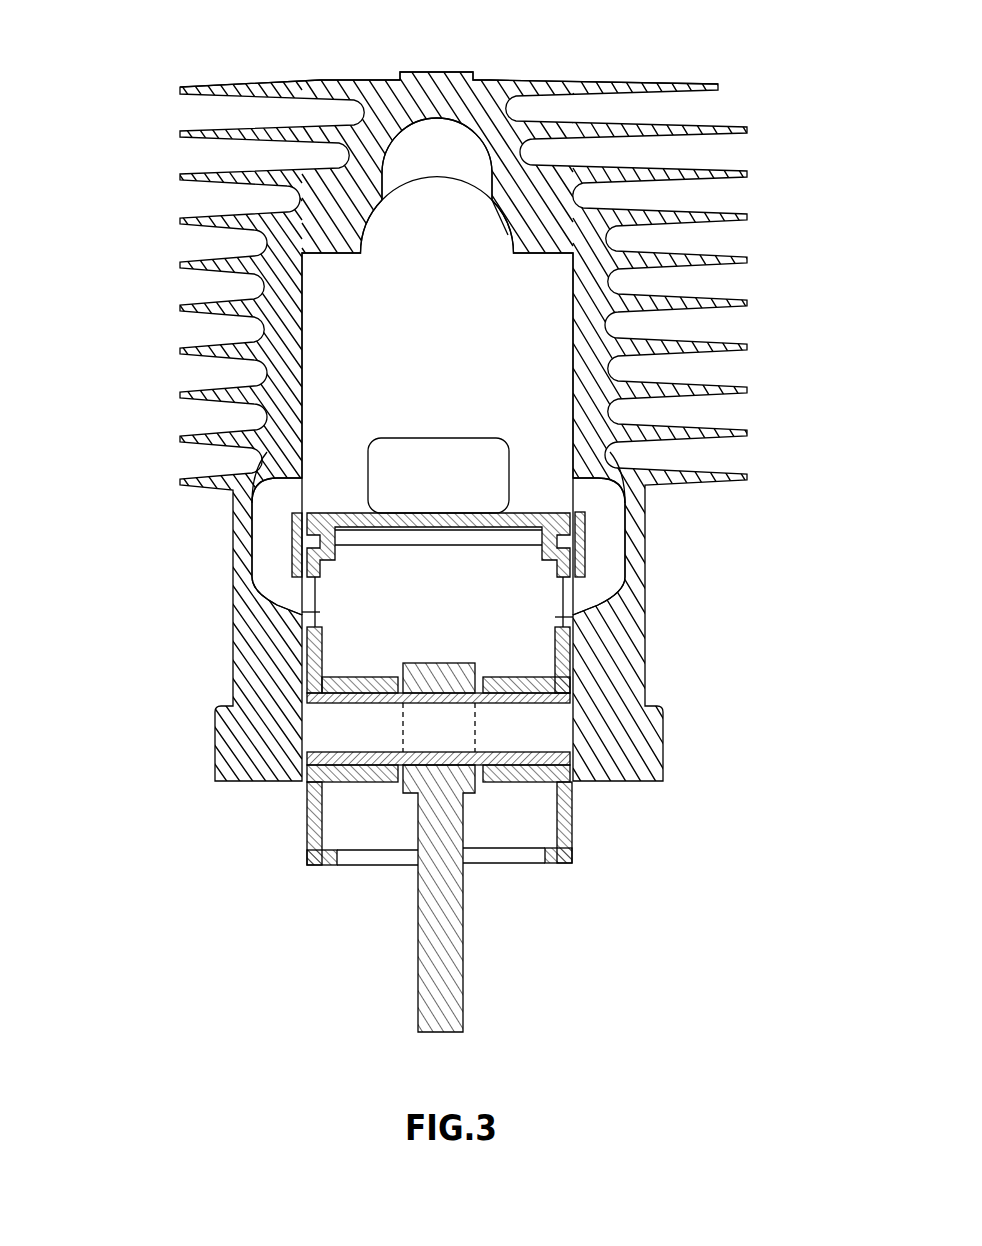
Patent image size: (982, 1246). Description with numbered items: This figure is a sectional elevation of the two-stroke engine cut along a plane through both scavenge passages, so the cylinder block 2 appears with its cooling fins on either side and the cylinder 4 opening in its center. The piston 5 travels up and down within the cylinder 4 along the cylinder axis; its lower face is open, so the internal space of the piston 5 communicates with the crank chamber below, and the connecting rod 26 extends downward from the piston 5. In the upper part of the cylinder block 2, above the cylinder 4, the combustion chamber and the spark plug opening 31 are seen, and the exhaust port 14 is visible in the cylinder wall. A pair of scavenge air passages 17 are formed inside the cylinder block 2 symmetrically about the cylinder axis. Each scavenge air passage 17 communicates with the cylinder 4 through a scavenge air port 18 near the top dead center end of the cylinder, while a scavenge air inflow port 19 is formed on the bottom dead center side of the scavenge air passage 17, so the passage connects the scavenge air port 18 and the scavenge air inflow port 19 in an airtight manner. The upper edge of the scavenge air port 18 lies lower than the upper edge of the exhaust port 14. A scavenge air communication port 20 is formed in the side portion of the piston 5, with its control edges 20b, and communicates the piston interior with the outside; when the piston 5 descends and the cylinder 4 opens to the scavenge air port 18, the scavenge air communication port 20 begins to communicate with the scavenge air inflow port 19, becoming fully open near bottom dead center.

The cylinder block 2 is at (490, 79).
The cylinder 4 is at (347, 330).
The piston 5 is at (667, 766).
The exhaust port 14 is at (437, 453).
The scavenge air passage 17 is at (270, 542).
The scavenge air port 18 is at (292, 493).
The scavenge air inflow port 19 is at (305, 610).
The scavenge air communication port 20 is at (568, 600).
The piston control edge / groove 20b is at (315, 581).
The connecting rod 26 is at (445, 913).
The spark plug opening 31 is at (407, 159).